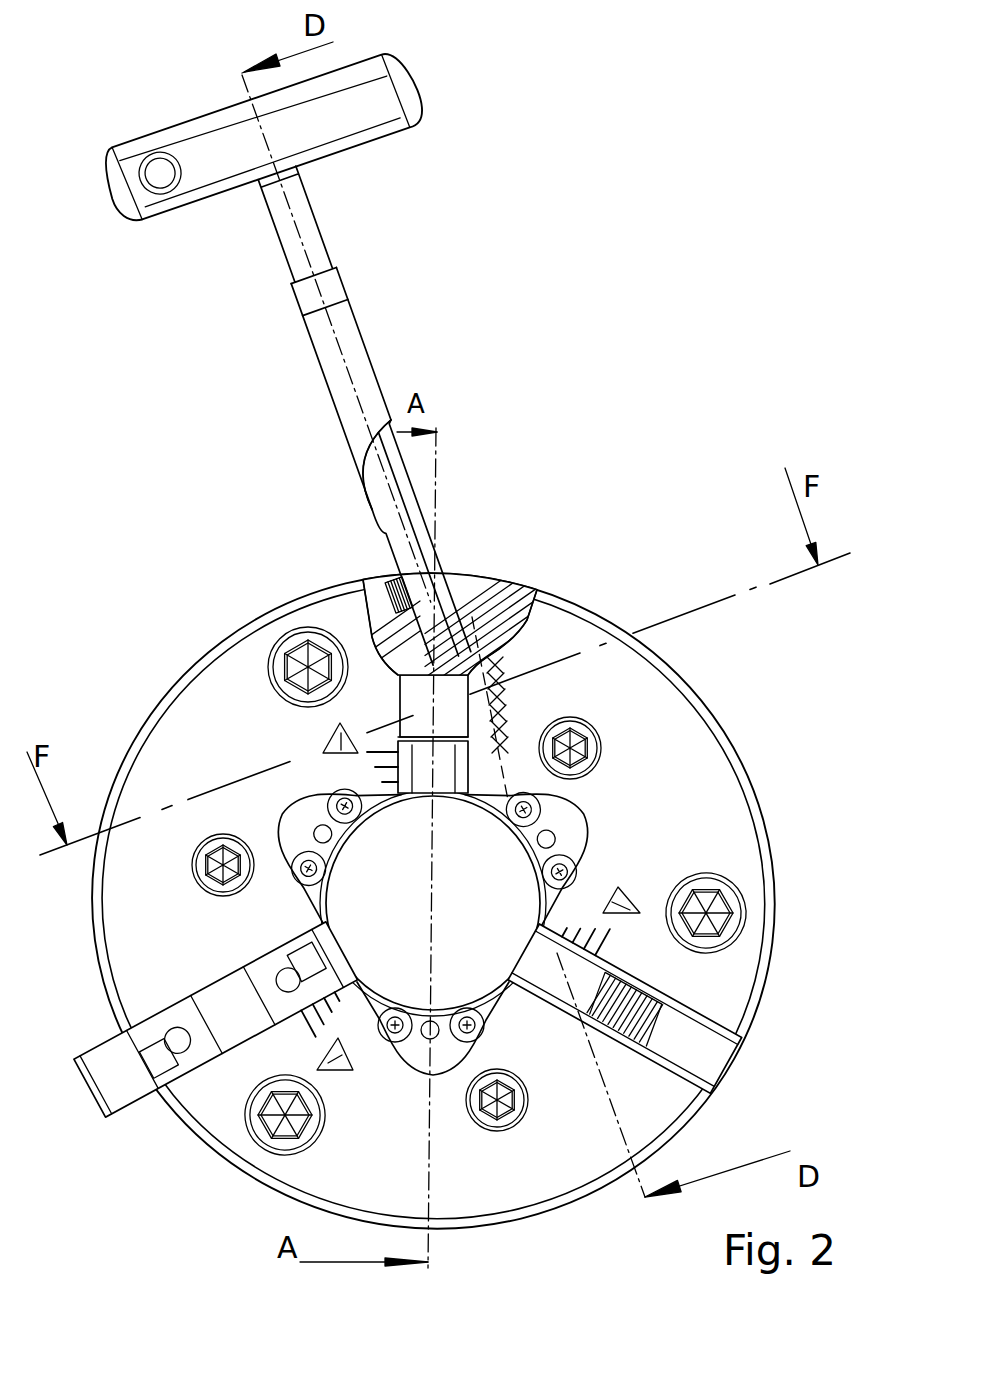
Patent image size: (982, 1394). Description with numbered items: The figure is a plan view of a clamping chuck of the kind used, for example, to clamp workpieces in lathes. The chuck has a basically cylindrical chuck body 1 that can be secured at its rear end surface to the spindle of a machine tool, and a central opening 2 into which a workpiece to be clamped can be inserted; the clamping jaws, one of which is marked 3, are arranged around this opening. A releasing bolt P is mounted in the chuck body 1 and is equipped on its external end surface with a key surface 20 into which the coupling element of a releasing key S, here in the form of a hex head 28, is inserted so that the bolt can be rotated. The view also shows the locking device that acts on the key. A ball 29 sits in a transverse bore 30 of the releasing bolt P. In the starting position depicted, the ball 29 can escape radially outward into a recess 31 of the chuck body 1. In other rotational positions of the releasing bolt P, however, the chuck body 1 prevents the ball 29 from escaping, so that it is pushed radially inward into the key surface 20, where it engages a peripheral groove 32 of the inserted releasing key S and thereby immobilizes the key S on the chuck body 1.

The chuck body 1 is at (631, 657).
The central opening 2 is at (632, 1000).
The clamping jaw 3 is at (223, 1033).
The key surface 20 is at (483, 571).
The hex head 28 is at (463, 567).
The ball 29 is at (383, 590).
The transverse bore 30 is at (337, 633).
The recess 31 is at (383, 616).
The peripheral groove 32 is at (390, 580).
The releasing key S is at (372, 390).
The releasing bolt P is at (520, 600).